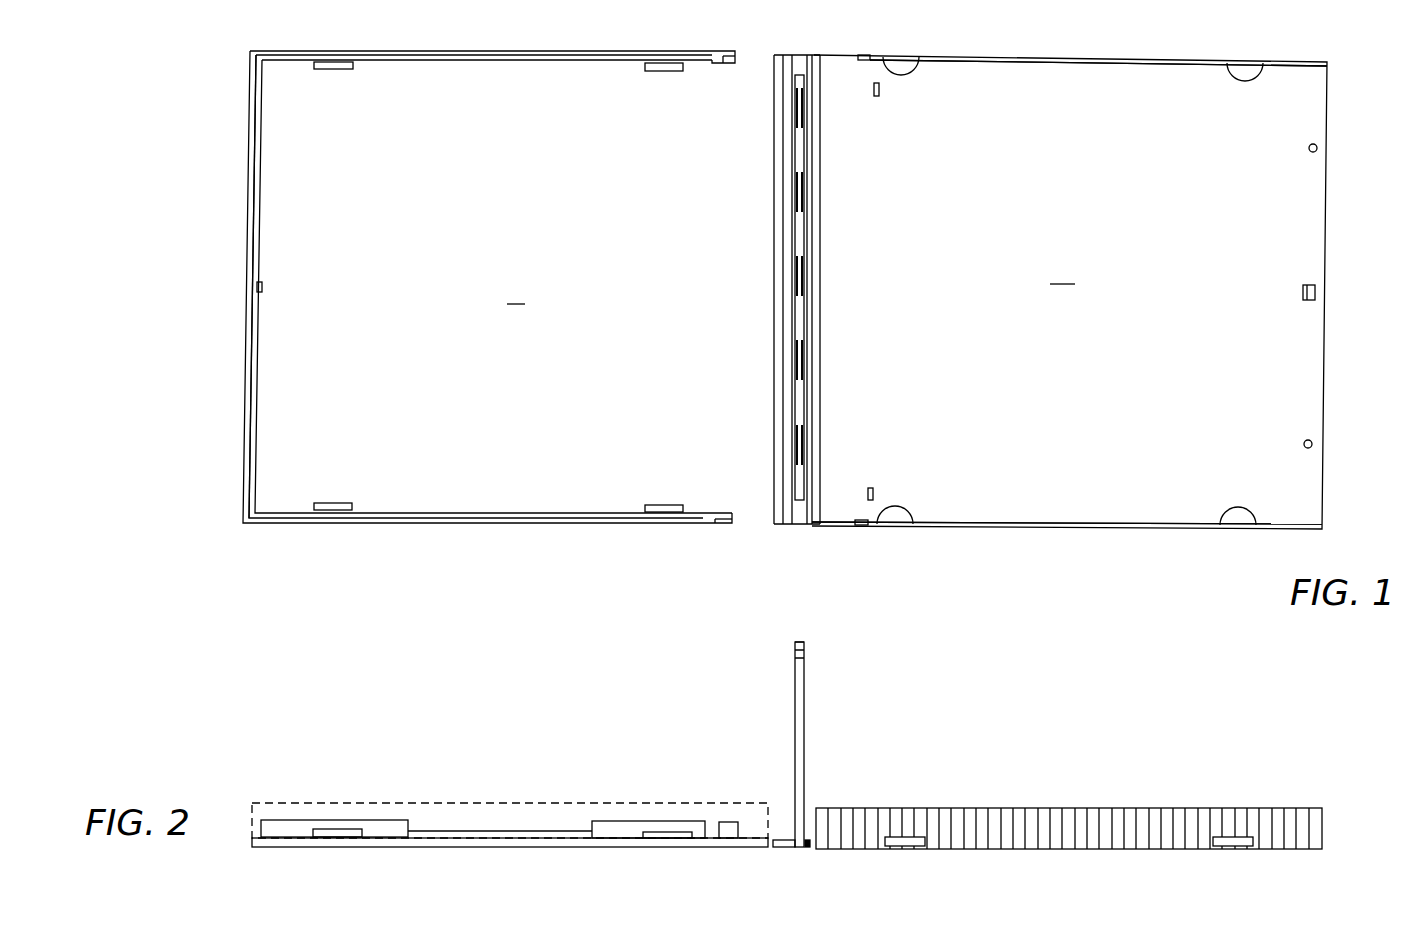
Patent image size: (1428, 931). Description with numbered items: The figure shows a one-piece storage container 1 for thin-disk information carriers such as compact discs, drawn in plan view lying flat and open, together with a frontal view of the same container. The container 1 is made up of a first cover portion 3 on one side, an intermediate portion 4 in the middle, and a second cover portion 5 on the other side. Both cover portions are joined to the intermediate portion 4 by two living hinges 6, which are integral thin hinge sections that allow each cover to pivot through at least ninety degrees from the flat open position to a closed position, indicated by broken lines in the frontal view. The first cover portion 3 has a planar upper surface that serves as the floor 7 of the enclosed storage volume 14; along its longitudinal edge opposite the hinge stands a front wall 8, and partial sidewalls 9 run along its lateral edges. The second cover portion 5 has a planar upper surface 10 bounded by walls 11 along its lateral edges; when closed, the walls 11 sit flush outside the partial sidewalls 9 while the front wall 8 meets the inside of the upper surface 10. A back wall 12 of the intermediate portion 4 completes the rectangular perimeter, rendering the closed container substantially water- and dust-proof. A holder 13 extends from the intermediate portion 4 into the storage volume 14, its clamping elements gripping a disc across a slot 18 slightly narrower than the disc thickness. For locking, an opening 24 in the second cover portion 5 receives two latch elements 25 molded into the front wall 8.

In FIG. 1, the storage container 1 is at (236, 533).
In FIG. 1, the first cover portion 3 is at (275, 418).
In FIG. 1, the intermediate portion 4 is at (794, 57).
In FIG. 2, the intermediate portion 4 is at (807, 717).
In FIG. 1, the second cover portion 5 is at (1300, 190).
In FIG. 1, the living hinges 6 is at (783, 55).
In FIG. 1, the floor 7 is at (516, 291).
In FIG. 1, the front wall 8 is at (262, 178).
In FIG. 2, the front wall 8 is at (291, 815).
In FIG. 1, the partial sidewalls 9 is at (383, 60).
In FIG. 2, the partial sidewalls 9 is at (375, 828).
In FIG. 1, the upper surface 10 is at (1066, 271).
In FIG. 1, the walls 11 is at (1118, 62).
In FIG. 2, the walls 11 is at (1040, 825).
In FIG. 2, the back wall 12 is at (780, 828).
In FIG. 2, the holder 13 is at (809, 632).
In FIG. 2, the enclosed storage volume 14 is at (509, 825).
In FIG. 1, the slot 18 is at (805, 345).
In FIG. 2, the slot 18 is at (806, 648).
In FIG. 1, the opening 24 is at (1315, 290).
In FIG. 1, the latch elements 25 is at (234, 271).